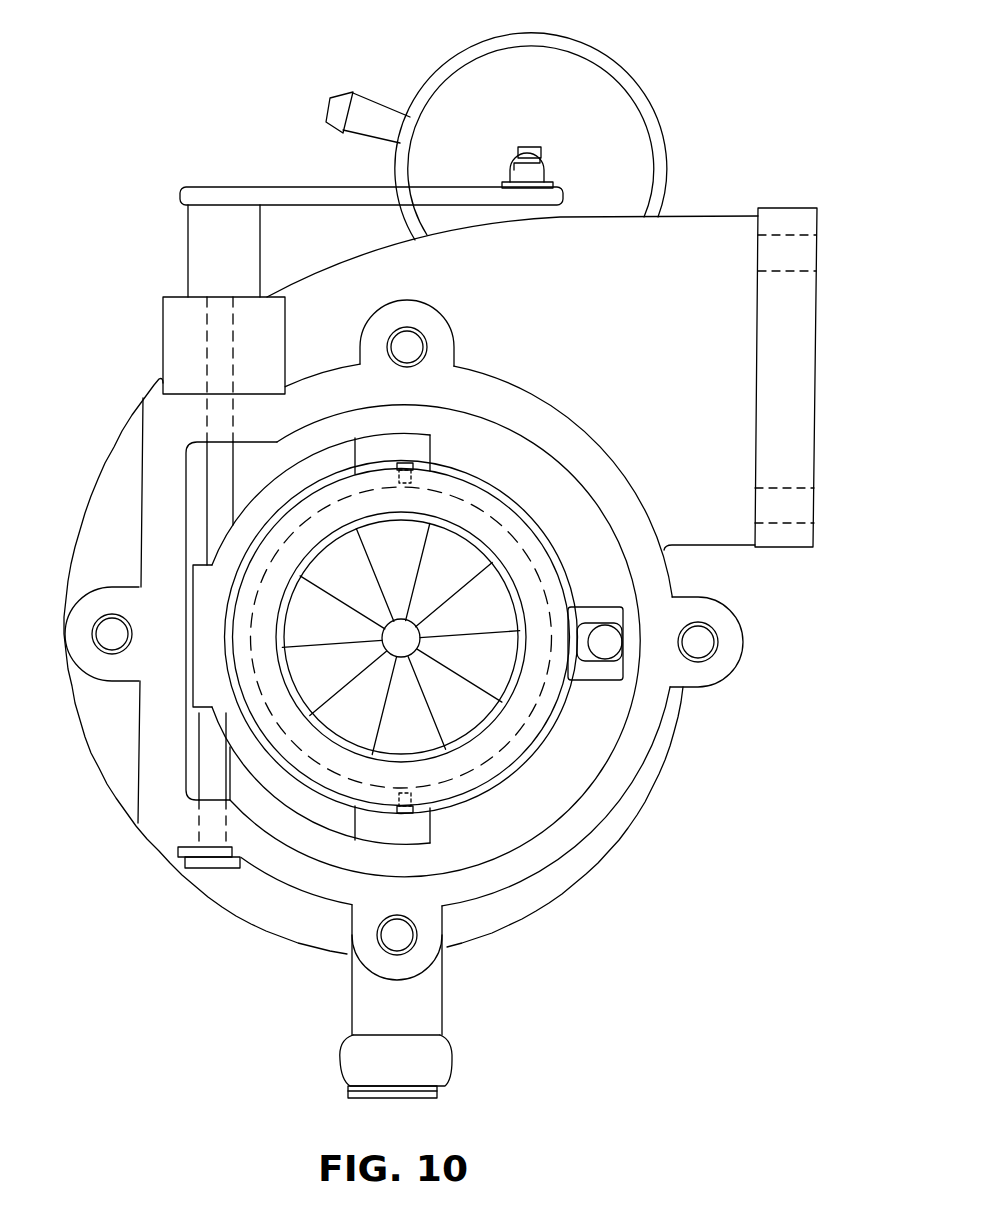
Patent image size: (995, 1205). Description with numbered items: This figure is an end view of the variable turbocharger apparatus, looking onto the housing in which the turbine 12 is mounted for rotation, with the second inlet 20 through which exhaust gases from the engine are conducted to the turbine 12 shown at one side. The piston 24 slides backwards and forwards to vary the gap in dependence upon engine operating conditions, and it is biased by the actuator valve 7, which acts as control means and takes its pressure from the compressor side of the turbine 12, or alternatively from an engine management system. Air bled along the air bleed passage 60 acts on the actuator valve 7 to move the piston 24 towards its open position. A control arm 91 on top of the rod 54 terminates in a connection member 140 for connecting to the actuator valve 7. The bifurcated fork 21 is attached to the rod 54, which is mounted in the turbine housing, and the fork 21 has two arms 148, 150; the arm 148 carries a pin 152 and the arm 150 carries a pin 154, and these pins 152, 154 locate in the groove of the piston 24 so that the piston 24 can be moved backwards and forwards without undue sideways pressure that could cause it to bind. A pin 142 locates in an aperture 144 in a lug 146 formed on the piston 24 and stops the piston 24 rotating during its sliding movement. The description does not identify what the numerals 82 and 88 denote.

The actuator valve 7 is at (615, 176).
The turbine 12 is at (452, 565).
The second inlet 20 is at (817, 423).
The fork 21 is at (205, 682).
The piston 24 is at (503, 757).
The rod 54 is at (210, 250).
The air bleed passage 60 is at (328, 113).
The drain port 82 is at (415, 1027).
The bolt holes 88 is at (797, 258).
The control arm 91 is at (310, 193).
The connection member 140 is at (527, 150).
The pin 142 is at (606, 642).
The aperture 144 is at (588, 655).
The lug 146 is at (572, 604).
The arm 148 is at (363, 453).
The arm 150 is at (352, 825).
The pin 152 is at (413, 467).
The pin 154 is at (415, 809).